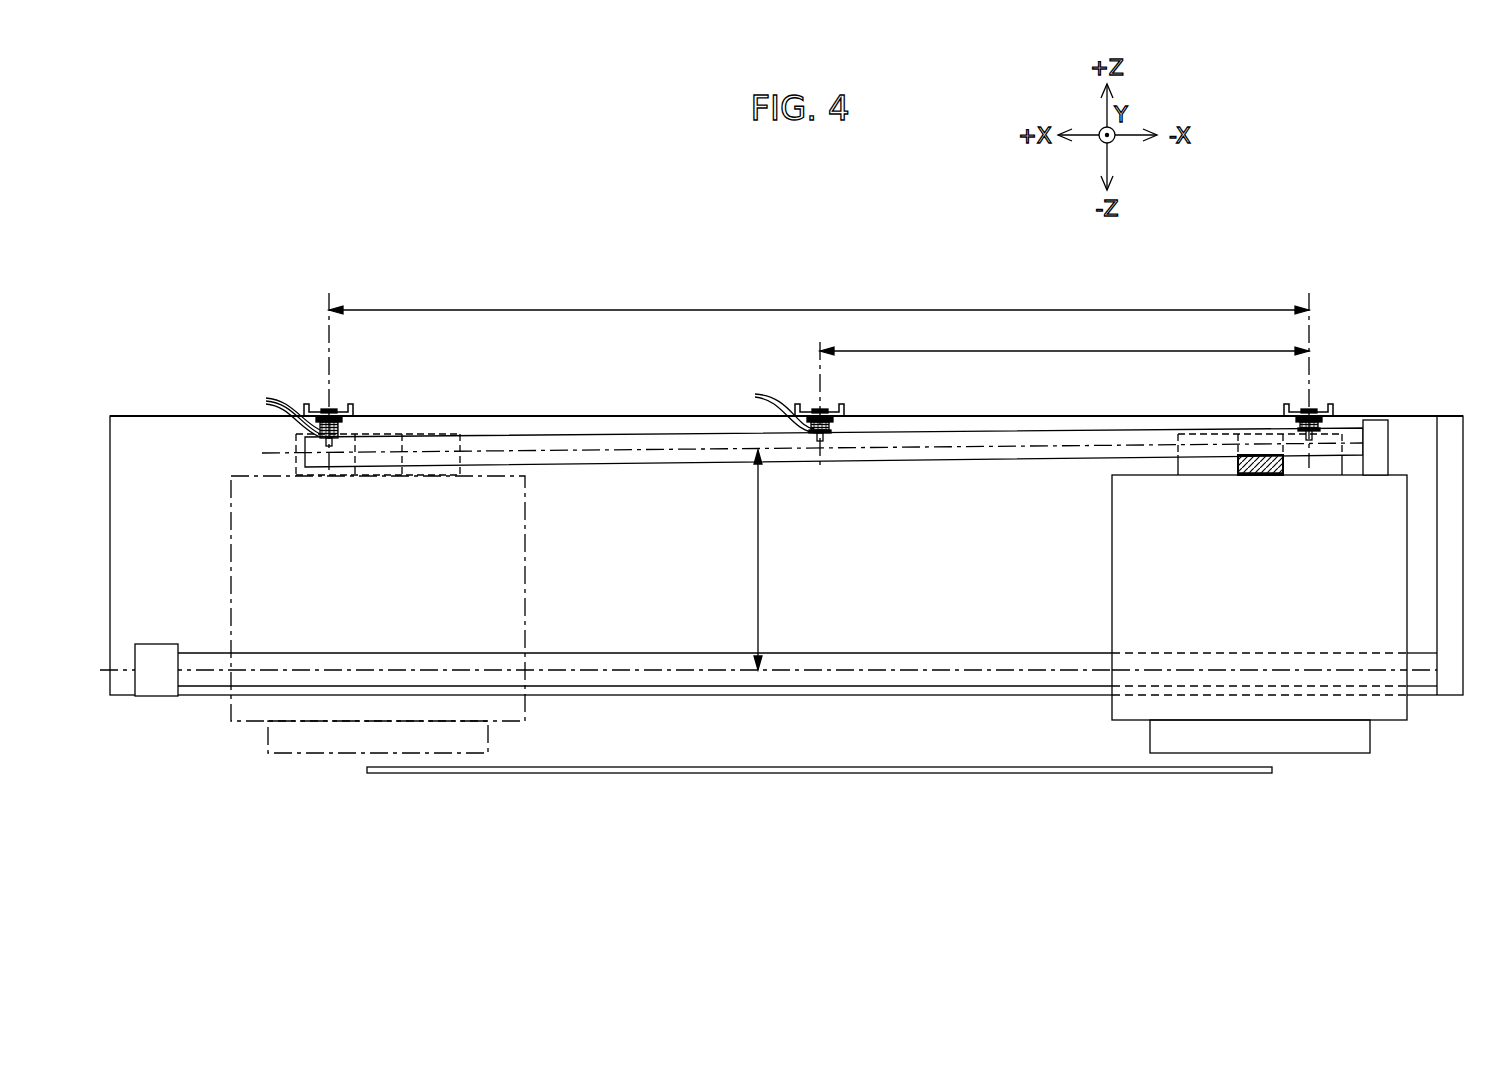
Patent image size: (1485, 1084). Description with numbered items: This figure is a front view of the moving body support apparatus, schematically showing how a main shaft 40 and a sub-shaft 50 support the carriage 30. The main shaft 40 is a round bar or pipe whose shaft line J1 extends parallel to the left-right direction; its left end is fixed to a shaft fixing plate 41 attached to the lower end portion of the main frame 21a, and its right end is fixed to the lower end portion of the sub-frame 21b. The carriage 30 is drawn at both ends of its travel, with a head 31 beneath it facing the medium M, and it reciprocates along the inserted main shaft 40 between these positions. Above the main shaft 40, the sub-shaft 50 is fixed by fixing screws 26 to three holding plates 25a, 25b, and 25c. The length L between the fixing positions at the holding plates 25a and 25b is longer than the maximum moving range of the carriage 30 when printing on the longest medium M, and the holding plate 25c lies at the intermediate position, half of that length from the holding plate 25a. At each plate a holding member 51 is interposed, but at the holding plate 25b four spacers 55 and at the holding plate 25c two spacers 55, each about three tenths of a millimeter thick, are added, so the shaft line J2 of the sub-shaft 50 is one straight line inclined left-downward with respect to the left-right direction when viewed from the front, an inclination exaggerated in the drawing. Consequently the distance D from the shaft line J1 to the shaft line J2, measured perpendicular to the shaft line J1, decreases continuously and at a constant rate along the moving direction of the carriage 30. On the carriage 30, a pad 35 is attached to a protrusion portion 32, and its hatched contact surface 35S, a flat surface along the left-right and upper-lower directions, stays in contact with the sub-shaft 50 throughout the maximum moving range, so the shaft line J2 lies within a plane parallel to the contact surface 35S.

The main frame 21a is at (1012, 427).
The sub-frame 21b is at (1452, 690).
The holding plate 25a is at (1330, 407).
The holding plate 25b is at (348, 406).
The holding plate 25c is at (842, 408).
The fixing screw 26 is at (323, 408).
The carriage 30 is at (527, 568).
The head 31 is at (267, 738).
The protrusion portion 32 is at (1343, 464).
The pad 35 is at (1285, 463).
The contact surface 35S is at (1235, 463).
The main shaft 40 is at (913, 655).
The shaft fixing plate 41 is at (157, 690).
The sub-shaft 50 is at (1085, 437).
The holding member 51 is at (300, 413).
The spacer 55 is at (524, 408).
The shaft line of the main shaft J1 is at (122, 667).
The shaft line of the sub-shaft J2 is at (270, 452).
The medium M is at (1173, 777).
The length L is at (819, 297).
The distance D is at (769, 560).